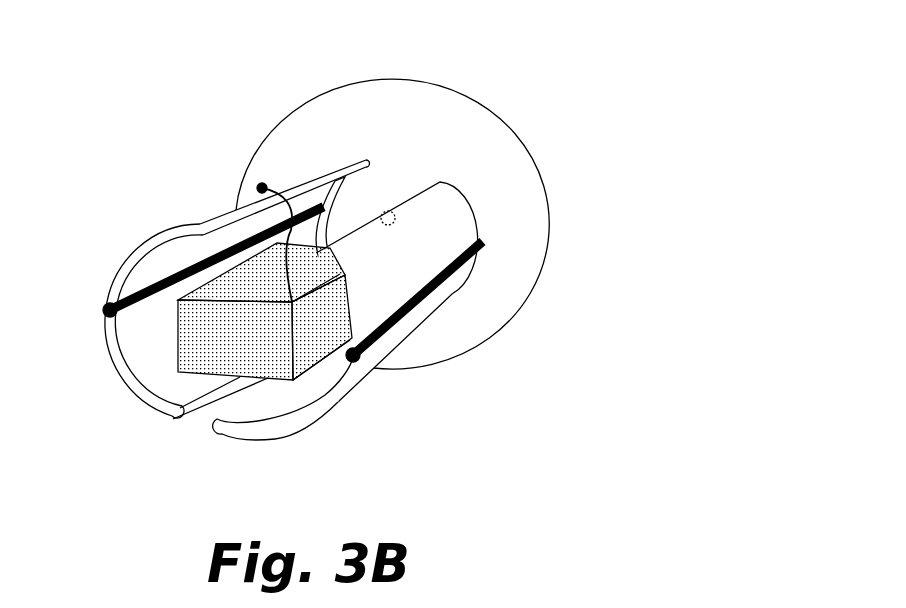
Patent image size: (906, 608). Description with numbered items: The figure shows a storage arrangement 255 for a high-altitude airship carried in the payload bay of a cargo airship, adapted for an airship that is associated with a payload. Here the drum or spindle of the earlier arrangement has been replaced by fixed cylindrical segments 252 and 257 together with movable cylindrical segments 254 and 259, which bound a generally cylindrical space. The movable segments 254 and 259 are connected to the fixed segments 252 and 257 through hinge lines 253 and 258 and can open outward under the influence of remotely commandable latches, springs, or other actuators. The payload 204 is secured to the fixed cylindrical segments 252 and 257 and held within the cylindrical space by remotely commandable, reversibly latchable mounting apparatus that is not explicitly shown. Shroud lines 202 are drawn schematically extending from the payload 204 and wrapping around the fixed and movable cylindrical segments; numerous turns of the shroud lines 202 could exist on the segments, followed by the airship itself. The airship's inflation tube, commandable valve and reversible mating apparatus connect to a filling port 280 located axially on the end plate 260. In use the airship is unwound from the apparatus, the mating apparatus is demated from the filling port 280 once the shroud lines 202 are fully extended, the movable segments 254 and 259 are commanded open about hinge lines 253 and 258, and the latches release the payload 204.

The shroud lines 202 is at (259, 186).
The payload 204 is at (254, 353).
The fixed cylindrical segment 252 is at (270, 431).
The hinge line 253 is at (360, 360).
The movable cylindrical segment 254 is at (453, 227).
The sleeve assembly 255 is at (502, 89).
The fixed cylindrical segment 257 is at (138, 396).
The hinge line 258 is at (103, 311).
The movable cylindrical segment 259 is at (155, 240).
The end plate 260 is at (528, 313).
The filling port 280 is at (389, 211).